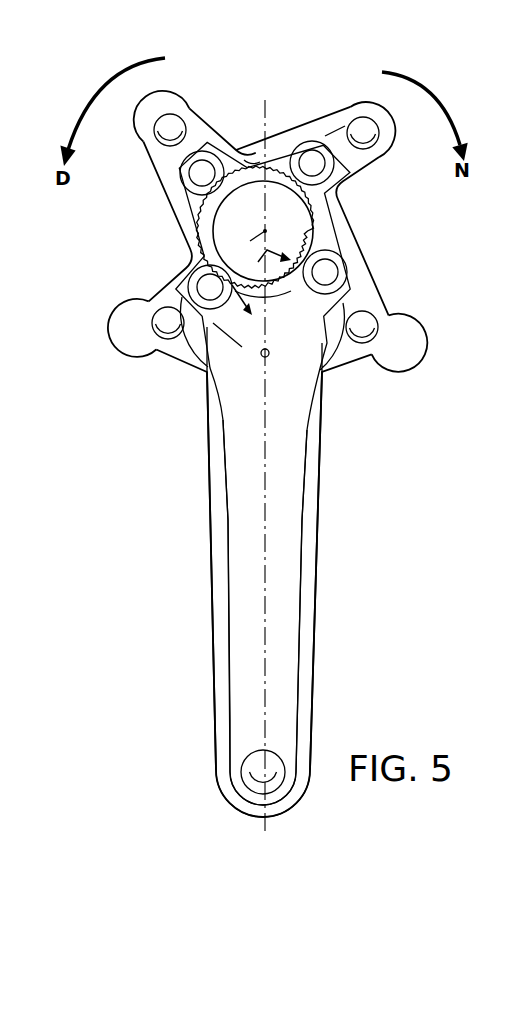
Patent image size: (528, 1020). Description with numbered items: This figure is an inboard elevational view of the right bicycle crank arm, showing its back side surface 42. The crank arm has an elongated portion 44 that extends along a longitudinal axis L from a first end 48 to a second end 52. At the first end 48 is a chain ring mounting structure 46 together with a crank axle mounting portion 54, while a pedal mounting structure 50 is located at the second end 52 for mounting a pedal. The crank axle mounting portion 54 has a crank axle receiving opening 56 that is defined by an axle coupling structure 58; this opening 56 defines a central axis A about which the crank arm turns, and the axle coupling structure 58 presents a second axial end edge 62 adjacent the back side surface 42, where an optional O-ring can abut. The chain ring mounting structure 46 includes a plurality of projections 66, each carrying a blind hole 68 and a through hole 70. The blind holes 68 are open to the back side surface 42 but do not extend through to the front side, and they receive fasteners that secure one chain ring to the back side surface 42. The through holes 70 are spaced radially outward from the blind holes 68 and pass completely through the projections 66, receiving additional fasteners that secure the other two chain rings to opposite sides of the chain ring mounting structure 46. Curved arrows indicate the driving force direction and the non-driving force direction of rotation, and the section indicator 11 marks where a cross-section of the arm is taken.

The section line 11- 11 is at (269, 291).
The back side surface 42 is at (237, 561).
The elongated portion 44 is at (313, 460).
The chain ring mounting structure 46 is at (332, 108).
The first end 48 is at (252, 152).
The pedal mounting structure 50 is at (246, 774).
The second end 52 is at (237, 812).
The crank axle mounting portion 54 is at (203, 209).
The crank axle receiving opening 56 is at (288, 252).
The axle coupling structure 58 is at (240, 194).
The second axial end edge 62 is at (271, 297).
The projections 66 is at (157, 154).
The blind holes 68 is at (200, 176).
The through holes 70 is at (157, 126).
The central axis A is at (252, 243).
The longitudinal axis L is at (263, 635).